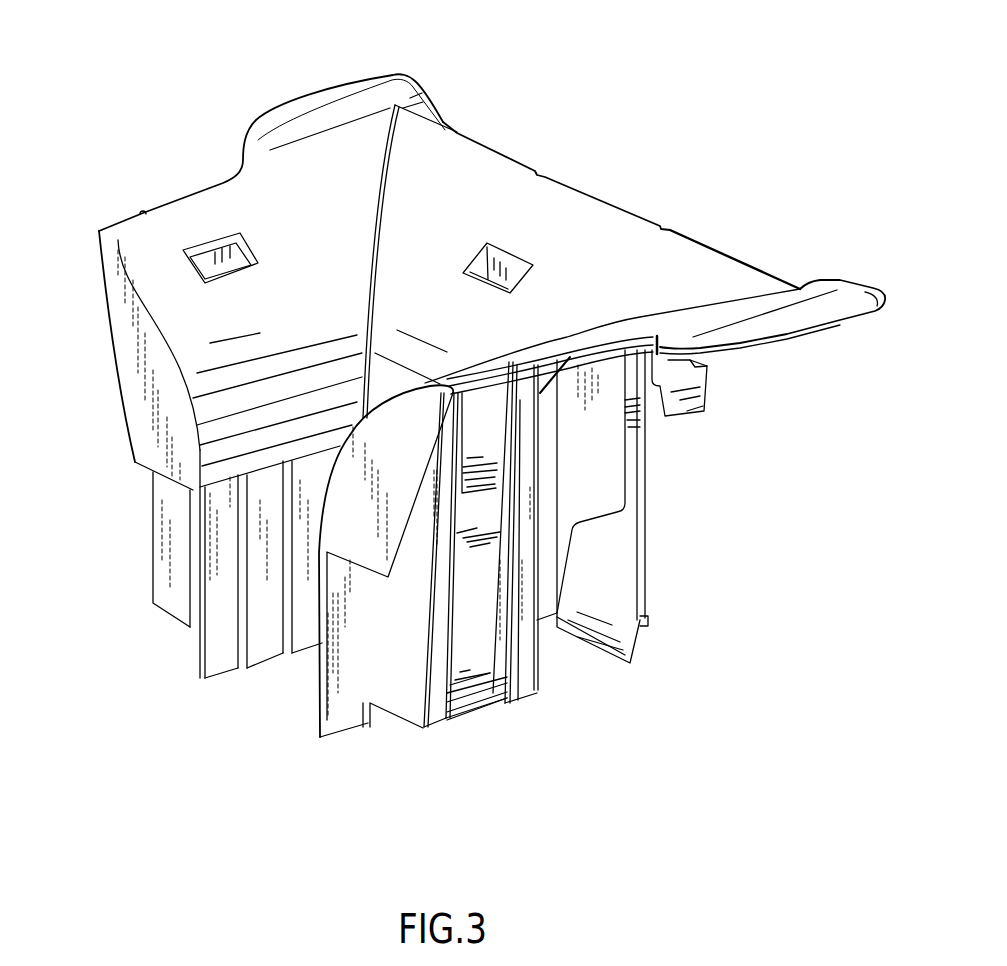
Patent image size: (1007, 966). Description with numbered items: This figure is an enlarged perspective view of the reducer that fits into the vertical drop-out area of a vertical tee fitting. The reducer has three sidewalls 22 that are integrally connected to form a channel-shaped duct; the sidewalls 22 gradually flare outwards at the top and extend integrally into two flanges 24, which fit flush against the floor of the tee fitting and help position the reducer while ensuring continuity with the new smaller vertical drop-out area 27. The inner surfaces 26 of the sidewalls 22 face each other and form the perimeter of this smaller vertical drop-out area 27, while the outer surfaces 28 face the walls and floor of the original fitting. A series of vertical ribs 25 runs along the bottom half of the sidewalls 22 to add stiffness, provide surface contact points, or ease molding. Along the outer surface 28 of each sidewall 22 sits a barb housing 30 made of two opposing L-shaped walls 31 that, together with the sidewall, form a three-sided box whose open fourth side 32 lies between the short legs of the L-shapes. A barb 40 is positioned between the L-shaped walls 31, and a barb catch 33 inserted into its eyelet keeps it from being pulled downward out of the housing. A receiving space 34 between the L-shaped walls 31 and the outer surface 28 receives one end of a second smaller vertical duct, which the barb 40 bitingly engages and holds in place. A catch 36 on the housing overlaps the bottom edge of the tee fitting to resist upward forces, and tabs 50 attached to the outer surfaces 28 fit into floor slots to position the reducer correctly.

The sidewalls 22 is at (532, 213).
The flanges 24 is at (347, 105).
The vertical ribs 25 is at (283, 652).
The inner surface 26 is at (207, 633).
The smaller vertical drop-out area 27 is at (363, 363).
The outer surface 28 is at (190, 557).
The barb housing 30 is at (520, 585).
The L-shaped walls 31 is at (413, 705).
The open fourth side 32 is at (525, 653).
The barb catch 33 is at (485, 437).
The receiving space 34 is at (340, 686).
The catch 36 is at (648, 627).
The barb 40 is at (472, 695).
The tabs 50 is at (707, 397).